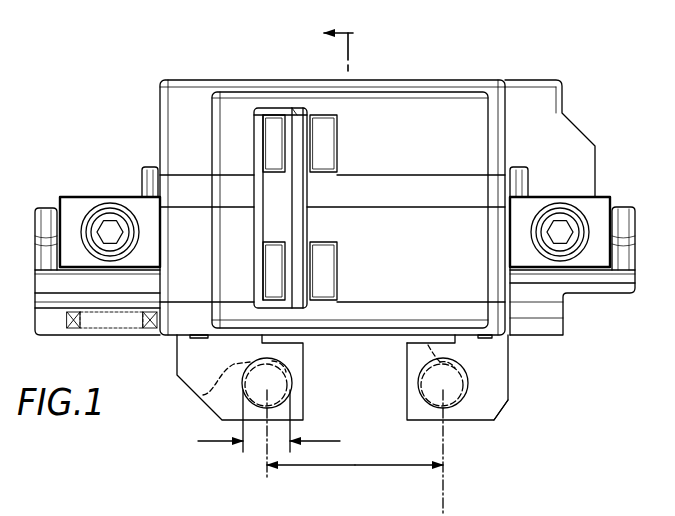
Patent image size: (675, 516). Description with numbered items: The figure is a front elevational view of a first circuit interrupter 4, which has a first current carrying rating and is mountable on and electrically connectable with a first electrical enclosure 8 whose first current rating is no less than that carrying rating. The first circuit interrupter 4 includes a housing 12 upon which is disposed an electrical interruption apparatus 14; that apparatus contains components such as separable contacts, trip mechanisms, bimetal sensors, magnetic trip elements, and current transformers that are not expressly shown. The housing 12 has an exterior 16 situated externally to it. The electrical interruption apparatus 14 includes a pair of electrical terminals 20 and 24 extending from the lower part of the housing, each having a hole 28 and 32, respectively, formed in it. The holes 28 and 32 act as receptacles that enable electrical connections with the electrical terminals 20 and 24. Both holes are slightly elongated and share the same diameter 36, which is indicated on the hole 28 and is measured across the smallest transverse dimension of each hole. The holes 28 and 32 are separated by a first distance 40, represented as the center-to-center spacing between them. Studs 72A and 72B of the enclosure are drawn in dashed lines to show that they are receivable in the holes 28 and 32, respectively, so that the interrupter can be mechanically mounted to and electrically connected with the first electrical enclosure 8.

The first circuit interrupter 4 is at (541, 67).
The first electrical enclosure 8 is at (348, 48).
The housing 12 is at (582, 125).
The electrical interruption apparatus 14 is at (508, 370).
The exterior 16 is at (255, 80).
The electrical terminal 20 is at (177, 349).
The electrical terminal 24 is at (501, 409).
The hole 28 is at (290, 369).
The hole 32 is at (465, 392).
The diameter 36 is at (252, 443).
The first distance 40 is at (365, 466).
The stud 72A is at (203, 395).
The stud 72B is at (428, 345).